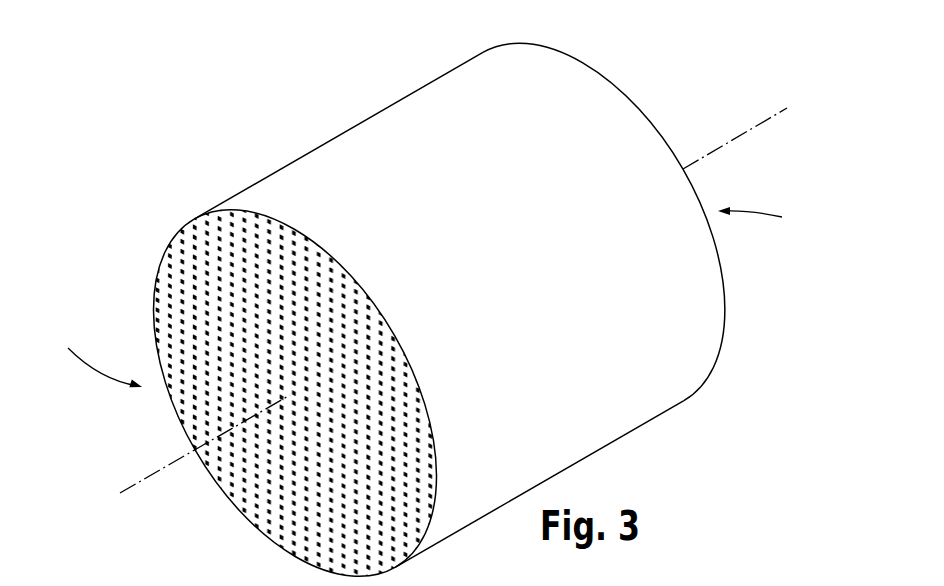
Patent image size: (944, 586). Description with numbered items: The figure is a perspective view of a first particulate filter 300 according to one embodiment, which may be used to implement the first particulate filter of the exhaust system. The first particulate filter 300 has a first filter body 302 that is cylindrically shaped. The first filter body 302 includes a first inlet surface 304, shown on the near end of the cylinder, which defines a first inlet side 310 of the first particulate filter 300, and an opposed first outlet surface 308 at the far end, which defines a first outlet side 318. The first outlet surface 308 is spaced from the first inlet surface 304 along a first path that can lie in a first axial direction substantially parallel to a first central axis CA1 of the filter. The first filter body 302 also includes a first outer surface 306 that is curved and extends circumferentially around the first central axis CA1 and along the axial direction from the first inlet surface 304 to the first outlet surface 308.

The first particulate filter 300 is at (268, 124).
The first filter body 302 is at (348, 153).
The first inlet surface 304 is at (190, 245).
The first outer surface 306 is at (417, 88).
The first outlet surface 308 is at (587, 60).
The first inlet side 310 is at (92, 356).
The first outlet side 318 is at (771, 218).
The first central axis CA1 is at (430, 319).